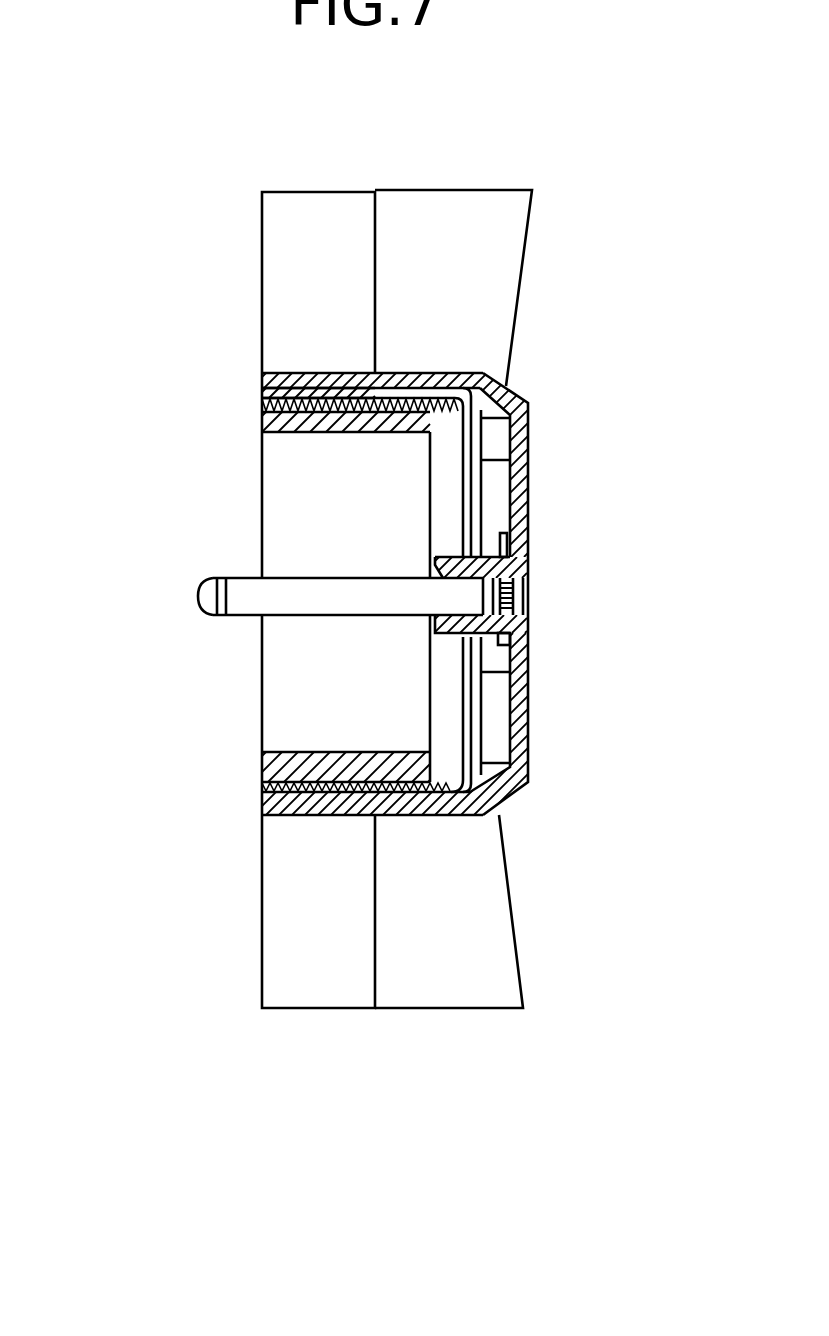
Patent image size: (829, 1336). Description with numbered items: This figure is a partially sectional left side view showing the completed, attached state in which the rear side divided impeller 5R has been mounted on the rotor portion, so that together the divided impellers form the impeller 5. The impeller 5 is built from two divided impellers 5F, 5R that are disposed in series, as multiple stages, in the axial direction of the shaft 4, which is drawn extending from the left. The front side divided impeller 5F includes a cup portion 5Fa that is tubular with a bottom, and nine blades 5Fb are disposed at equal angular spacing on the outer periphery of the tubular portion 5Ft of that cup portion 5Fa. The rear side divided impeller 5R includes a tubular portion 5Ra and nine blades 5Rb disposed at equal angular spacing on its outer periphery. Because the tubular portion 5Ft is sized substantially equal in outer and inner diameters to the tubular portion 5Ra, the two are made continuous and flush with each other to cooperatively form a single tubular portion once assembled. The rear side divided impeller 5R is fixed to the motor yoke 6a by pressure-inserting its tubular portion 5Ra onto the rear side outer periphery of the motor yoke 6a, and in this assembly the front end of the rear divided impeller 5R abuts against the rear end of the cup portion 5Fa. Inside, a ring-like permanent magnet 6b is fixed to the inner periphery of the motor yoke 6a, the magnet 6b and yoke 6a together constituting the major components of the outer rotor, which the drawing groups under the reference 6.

The shaft 4 is at (245, 617).
The impeller 5 is at (540, 1127).
The rear side divided impeller 5R is at (325, 1012).
The blades 5Rb is at (298, 238).
The tubular portion 5Ra is at (338, 372).
The front side divided impeller 5F is at (455, 1015).
The blades 5Fb is at (457, 312).
The tubular portion 5Ft is at (453, 370).
The cup portion 5Fa is at (518, 393).
The bearing assembly 6 is at (97, 330).
The motor yoke 6a is at (265, 400).
The permanent magnet 6b is at (265, 422).